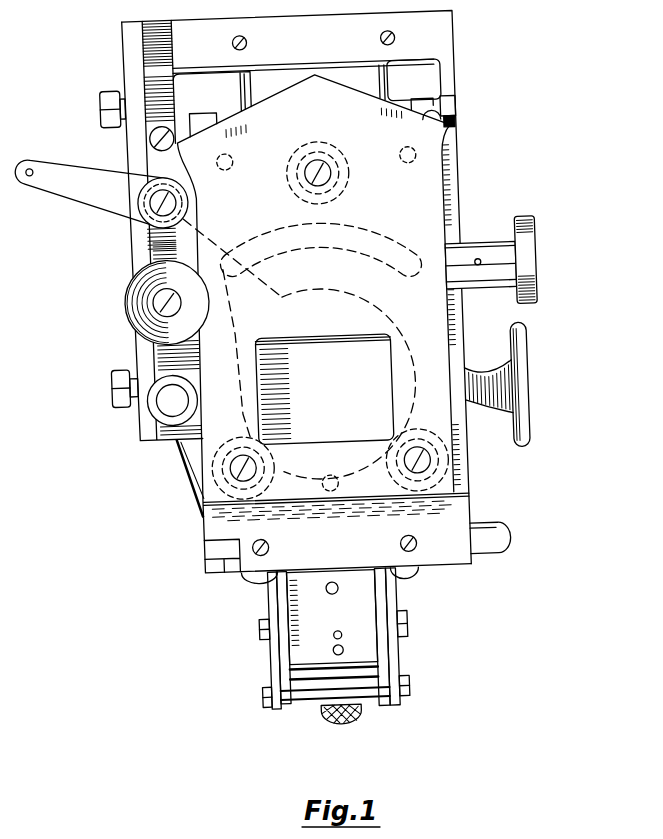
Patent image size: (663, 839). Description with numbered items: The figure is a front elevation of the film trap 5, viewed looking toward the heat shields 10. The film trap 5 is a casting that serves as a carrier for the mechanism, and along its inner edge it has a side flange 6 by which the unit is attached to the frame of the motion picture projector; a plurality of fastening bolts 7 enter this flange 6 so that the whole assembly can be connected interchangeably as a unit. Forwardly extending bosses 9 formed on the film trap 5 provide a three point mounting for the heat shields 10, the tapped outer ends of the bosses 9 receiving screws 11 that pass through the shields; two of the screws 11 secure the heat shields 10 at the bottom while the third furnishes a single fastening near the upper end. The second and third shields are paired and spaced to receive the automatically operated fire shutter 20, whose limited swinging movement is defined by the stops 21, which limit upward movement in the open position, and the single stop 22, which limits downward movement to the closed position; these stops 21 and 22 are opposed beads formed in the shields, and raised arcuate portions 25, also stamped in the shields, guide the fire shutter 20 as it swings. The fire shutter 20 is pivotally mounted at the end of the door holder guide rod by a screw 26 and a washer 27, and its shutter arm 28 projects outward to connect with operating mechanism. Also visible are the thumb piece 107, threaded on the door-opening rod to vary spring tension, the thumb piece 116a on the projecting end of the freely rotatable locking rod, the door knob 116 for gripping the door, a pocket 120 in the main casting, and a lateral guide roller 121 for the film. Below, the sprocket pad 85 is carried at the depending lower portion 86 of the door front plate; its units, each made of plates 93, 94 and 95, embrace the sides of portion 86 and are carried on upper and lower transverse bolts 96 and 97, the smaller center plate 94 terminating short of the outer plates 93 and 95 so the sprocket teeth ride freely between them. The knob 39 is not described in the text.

The film trap 5 is at (455, 40).
The side flange 6 is at (122, 47).
The fastening bolts 7 is at (100, 104).
The bosses 9 is at (308, 155).
The heat shields 10 is at (438, 163).
The screws 11 is at (328, 175).
The fire shutter 20 is at (340, 303).
The stops 21 is at (232, 168).
The stop 22 is at (340, 485).
The arcuate portions 25 is at (392, 240).
The screw 26 is at (153, 208).
The washer 27 is at (157, 219).
The shutter arm 28 is at (53, 185).
The knurled knob 39 is at (343, 727).
The sprocket pad 85 is at (262, 637).
The depending lower portion 86 is at (333, 625).
The plate 93 is at (272, 656).
The plate 94 is at (282, 685).
The plate 95 is at (297, 695).
The upper transverse bolt 96 is at (415, 617).
The lower transverse bolt 97 is at (415, 685).
The thumb piece 107 is at (128, 304).
The door knob 116 is at (527, 370).
The thumb piece 116a is at (535, 296).
The pocket 120 is at (250, 74).
The lateral guide roller 121 is at (388, 64).